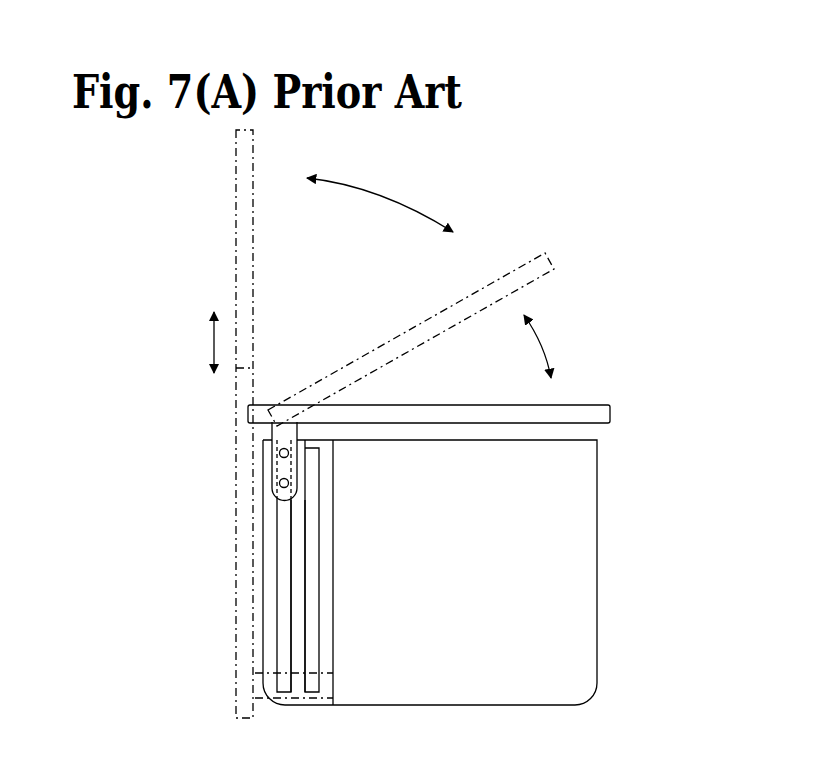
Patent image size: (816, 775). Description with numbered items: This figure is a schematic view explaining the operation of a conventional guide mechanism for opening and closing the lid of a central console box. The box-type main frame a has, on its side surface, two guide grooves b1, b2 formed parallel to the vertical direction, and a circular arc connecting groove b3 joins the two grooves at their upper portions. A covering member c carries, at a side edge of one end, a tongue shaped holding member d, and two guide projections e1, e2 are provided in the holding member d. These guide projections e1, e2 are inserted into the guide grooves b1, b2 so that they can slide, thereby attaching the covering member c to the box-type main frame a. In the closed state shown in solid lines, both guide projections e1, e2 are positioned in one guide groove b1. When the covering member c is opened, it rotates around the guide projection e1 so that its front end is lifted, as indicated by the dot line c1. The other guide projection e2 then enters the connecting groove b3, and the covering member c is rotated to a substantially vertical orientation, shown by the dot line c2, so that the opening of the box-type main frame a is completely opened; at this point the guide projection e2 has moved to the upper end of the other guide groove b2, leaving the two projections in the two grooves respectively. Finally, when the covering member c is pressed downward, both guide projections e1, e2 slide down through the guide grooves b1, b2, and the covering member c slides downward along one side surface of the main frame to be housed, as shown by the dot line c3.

The box-type main frame a is at (570, 547).
The guide groove b1 is at (281, 630).
The guide groove b2 is at (313, 637).
The circular arc connecting groove b3 is at (295, 502).
The covering member c is at (560, 418).
The dot line (covering member in lifted state) c1 is at (552, 256).
The dot line (covering member in vertical state) c2 is at (245, 207).
The dot line (covering member in housed state) c3 is at (232, 672).
The tongue shaped holding member d is at (278, 434).
The guide projection e1 is at (281, 457).
The guide projection e2 is at (282, 488).